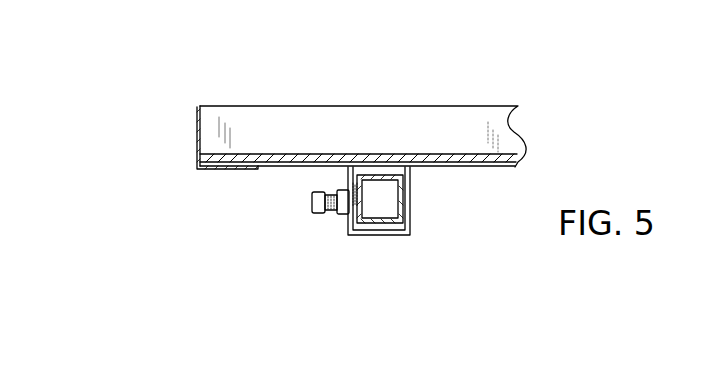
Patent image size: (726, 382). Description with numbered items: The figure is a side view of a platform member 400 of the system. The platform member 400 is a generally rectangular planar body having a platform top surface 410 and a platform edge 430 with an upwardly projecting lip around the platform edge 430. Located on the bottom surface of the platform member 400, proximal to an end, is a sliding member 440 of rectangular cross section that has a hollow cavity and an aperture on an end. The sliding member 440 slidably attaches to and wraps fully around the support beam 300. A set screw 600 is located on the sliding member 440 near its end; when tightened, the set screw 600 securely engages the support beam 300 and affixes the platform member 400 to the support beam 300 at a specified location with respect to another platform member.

The support beam 300 is at (352, 182).
The platform member 400 is at (552, 116).
The platform top surface 410 is at (363, 154).
The platform edge 430 is at (269, 120).
The sliding member 440 is at (387, 230).
The set screw 600 is at (313, 199).